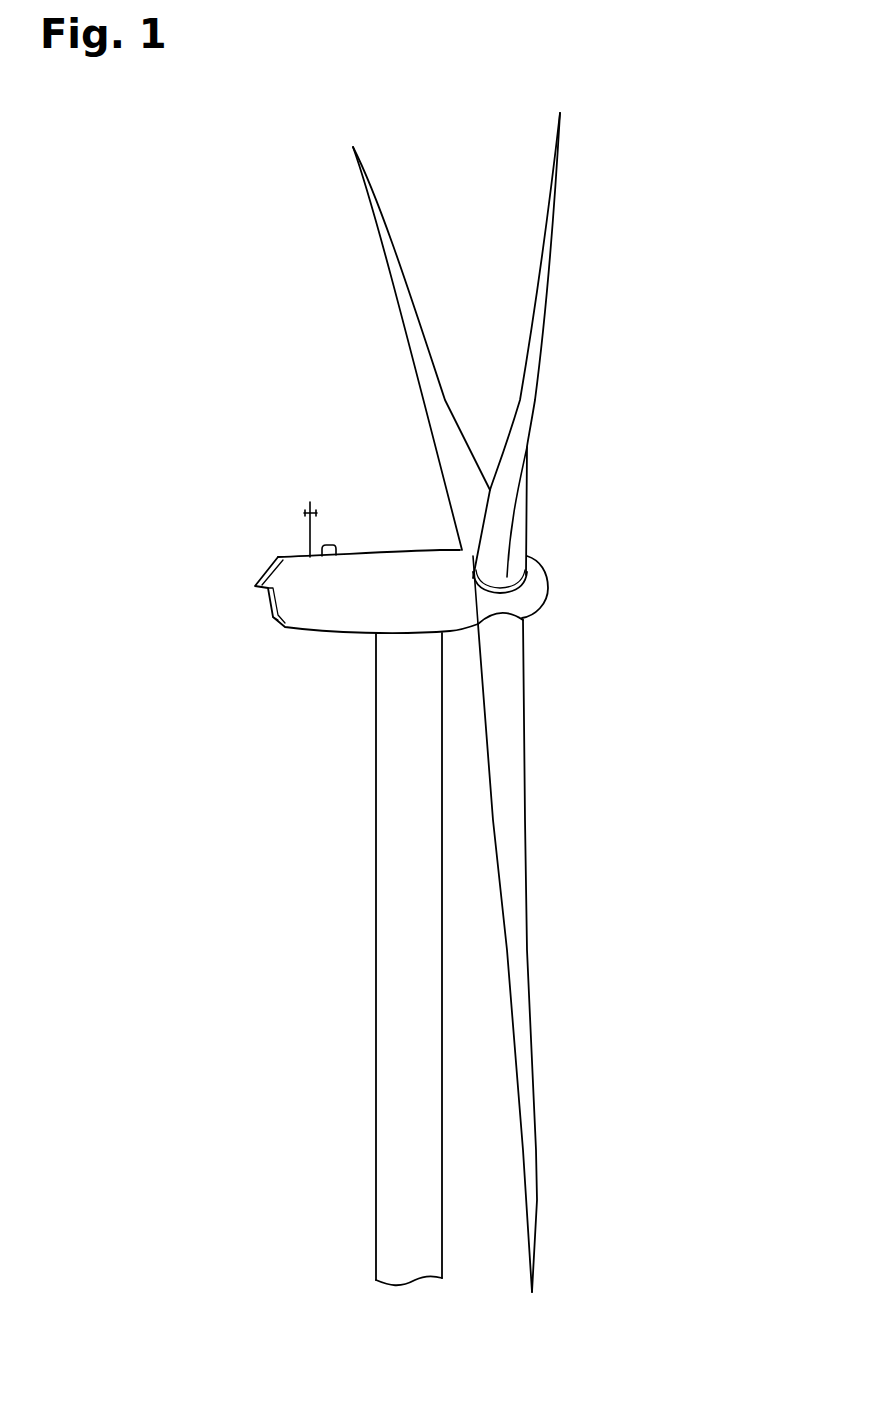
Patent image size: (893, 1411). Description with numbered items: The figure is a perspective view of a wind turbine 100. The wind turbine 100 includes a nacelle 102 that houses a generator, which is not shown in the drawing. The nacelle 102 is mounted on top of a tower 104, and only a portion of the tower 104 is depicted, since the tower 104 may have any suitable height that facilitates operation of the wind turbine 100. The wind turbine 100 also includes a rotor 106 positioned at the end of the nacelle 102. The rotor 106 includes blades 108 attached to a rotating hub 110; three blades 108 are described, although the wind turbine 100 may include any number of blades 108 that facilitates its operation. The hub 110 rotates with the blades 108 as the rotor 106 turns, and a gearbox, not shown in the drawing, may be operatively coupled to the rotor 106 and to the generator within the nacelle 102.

The wind turbine 100 is at (218, 180).
The nacelle 102 is at (306, 652).
The tower 104 is at (376, 930).
The rotor 106 is at (662, 314).
The blades 108 is at (403, 264).
The rotating hub 110 is at (548, 585).